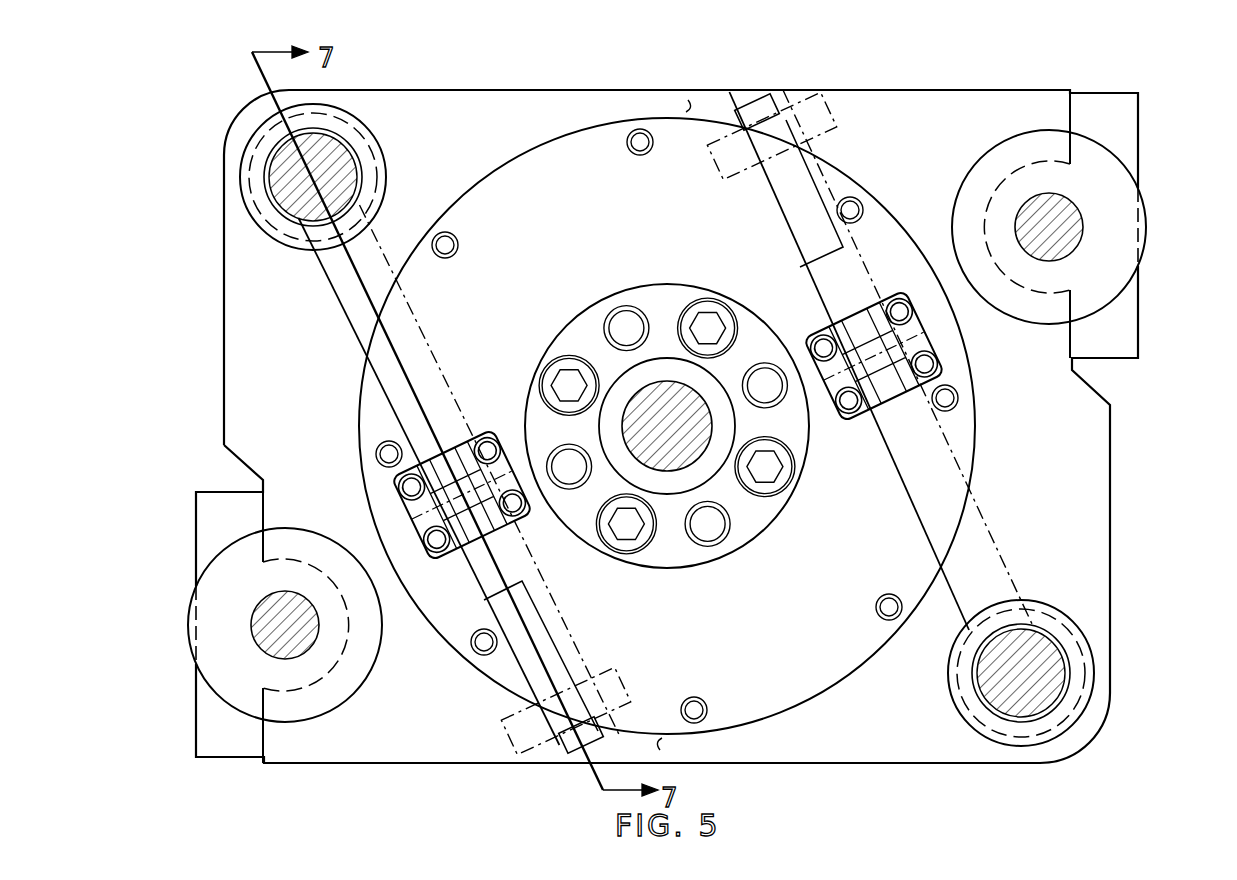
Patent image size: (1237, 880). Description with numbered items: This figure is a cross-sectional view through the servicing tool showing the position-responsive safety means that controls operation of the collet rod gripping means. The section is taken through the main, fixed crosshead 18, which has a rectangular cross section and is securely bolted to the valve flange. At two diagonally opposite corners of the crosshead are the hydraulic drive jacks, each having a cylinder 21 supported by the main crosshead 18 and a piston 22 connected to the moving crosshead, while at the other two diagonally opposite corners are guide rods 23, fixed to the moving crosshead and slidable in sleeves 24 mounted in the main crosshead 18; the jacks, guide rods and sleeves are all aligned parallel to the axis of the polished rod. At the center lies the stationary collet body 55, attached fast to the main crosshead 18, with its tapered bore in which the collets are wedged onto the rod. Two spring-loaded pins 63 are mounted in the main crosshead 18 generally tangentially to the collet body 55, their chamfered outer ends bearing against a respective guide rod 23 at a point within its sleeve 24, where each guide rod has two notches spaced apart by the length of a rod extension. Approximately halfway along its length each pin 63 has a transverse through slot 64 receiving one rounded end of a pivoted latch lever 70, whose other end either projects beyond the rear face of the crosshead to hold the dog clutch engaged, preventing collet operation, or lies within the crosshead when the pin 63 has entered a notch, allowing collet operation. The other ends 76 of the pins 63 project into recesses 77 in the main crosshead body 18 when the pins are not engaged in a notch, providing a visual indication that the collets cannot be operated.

The main crosshead 18 is at (530, 177).
The hydraulic jack cylinder 21 is at (1110, 165).
The hydraulic jack piston 22 is at (1080, 231).
The guide rod 23 is at (278, 205).
The sleeve 24 is at (255, 173).
The collet body 55 is at (645, 297).
The spring-loaded pin 63 is at (358, 322).
The transverse through slot 64 is at (547, 503).
The latch lever 70 is at (486, 519).
The pin end 76 is at (803, 63).
The recess 77 is at (688, 105).